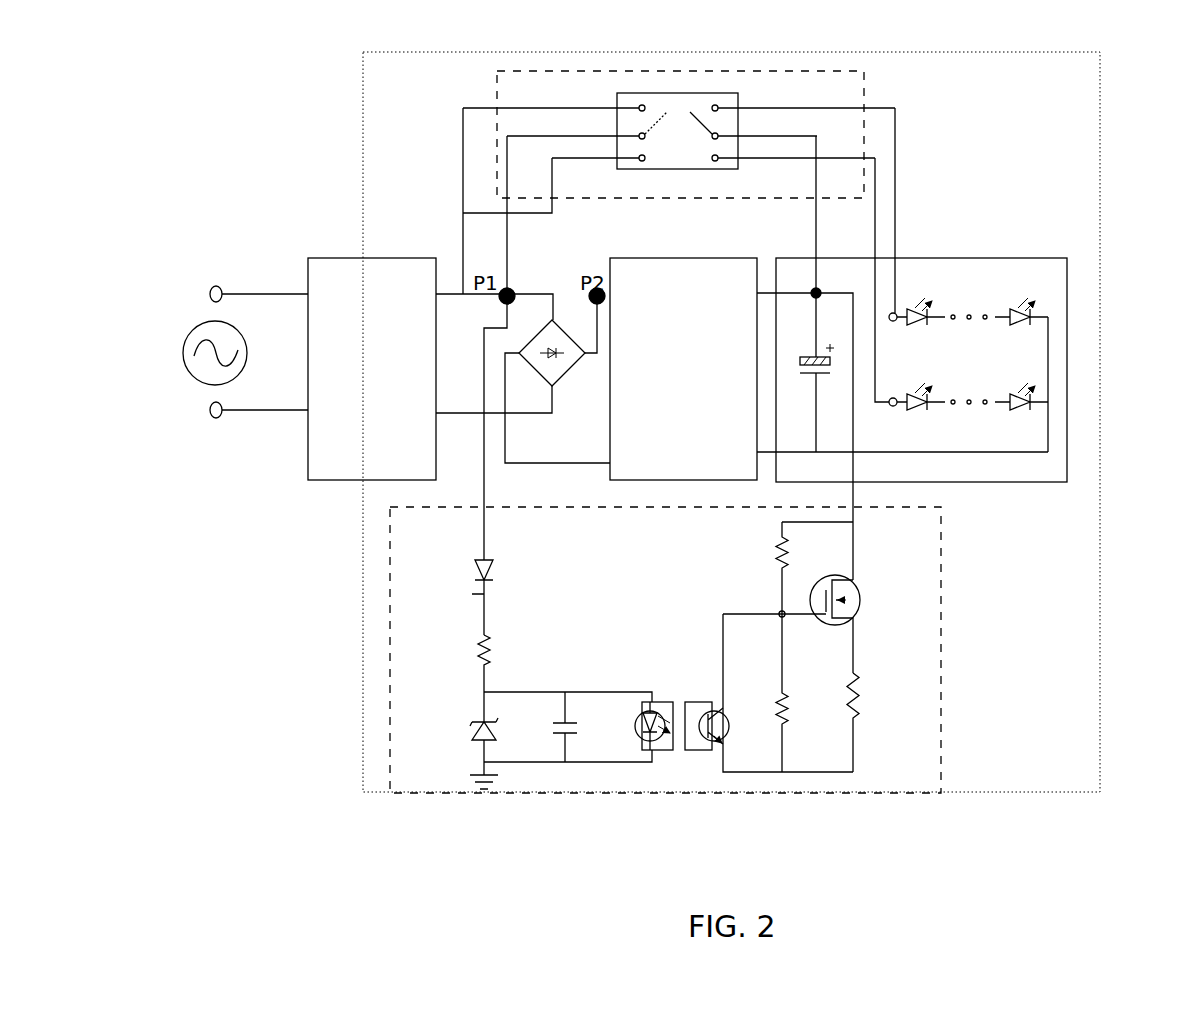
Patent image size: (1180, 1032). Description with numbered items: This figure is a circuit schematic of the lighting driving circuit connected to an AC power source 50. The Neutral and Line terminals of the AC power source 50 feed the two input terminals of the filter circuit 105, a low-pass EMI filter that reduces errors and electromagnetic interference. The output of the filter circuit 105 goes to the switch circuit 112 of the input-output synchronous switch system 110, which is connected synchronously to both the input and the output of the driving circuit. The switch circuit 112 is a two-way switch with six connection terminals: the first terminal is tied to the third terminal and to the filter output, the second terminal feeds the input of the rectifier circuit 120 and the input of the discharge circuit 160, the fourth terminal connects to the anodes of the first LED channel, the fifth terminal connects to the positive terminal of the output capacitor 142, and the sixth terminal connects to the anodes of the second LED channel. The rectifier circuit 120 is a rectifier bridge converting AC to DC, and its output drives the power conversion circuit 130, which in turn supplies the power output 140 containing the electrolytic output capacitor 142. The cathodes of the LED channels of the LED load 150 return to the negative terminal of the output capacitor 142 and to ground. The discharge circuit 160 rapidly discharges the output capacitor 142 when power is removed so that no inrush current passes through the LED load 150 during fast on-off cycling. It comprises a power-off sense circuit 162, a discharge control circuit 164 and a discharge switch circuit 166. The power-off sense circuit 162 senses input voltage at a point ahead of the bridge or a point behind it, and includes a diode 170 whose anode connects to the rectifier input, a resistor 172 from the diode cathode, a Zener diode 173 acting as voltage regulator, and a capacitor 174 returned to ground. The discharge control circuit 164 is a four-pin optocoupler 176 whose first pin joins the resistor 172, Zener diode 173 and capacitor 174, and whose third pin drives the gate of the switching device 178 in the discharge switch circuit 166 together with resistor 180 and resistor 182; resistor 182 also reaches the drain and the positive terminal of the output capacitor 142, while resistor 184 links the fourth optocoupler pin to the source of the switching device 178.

The AC power source 50 is at (172, 328).
The filter circuit 105 is at (330, 258).
The input-output synchronous switch system 110 is at (497, 71).
The switch circuit 112 is at (683, 93).
The rectifier circuit 120 is at (565, 316).
The power conversion circuit 130 is at (661, 258).
The power output 140 is at (840, 284).
The output capacitor 142 is at (803, 346).
The LED load 150 is at (1067, 317).
The discharge circuit 160 is at (942, 638).
The power-off sense circuit 162 is at (521, 719).
The discharge control circuit 164 is at (664, 780).
The discharge switch circuit 166 is at (818, 703).
The diode 170 is at (513, 592).
The resistor 172 is at (516, 663).
The Zener diode 173 is at (479, 719).
The capacitor 174 is at (585, 727).
The optocoupler 176 is at (682, 707).
The switching device 178 is at (861, 624).
The resistor 180 is at (758, 568).
The resistor 182 is at (807, 693).
The resistor 184 is at (879, 722).